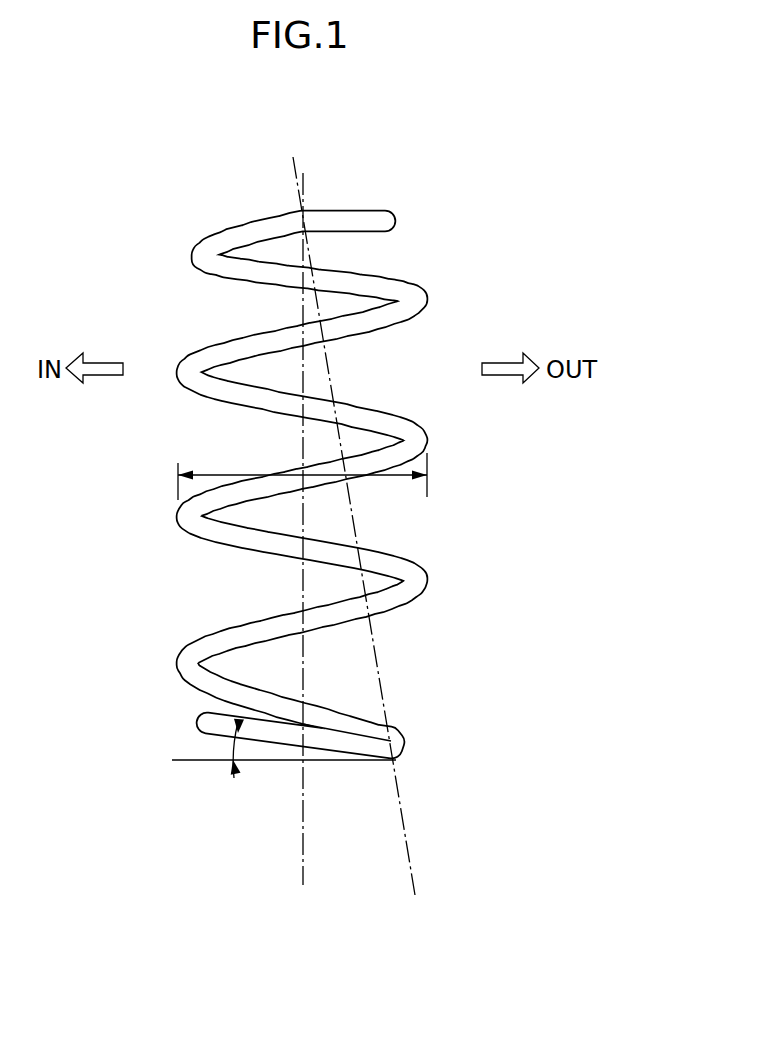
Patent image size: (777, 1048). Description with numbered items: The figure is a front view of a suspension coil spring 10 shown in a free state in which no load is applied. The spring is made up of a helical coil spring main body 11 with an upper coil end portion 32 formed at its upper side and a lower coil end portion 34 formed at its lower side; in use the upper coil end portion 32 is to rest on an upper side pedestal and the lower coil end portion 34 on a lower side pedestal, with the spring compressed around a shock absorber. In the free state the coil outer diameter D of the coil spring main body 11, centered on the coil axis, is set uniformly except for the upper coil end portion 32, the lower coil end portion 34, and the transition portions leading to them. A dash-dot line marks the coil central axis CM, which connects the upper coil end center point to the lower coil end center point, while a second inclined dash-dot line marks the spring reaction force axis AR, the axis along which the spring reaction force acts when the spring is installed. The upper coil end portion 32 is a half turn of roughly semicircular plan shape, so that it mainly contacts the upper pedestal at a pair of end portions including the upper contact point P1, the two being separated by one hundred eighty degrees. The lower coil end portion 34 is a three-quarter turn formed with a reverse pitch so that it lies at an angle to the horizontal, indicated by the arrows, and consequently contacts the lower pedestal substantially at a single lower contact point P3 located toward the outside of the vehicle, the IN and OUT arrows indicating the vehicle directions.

The suspension coil spring 10 is at (325, 438).
The coil spring main body 11 is at (412, 426).
The upper coil end portion 32 is at (384, 219).
The lower coil end portion 34 is at (206, 722).
The coil central axis CM is at (303, 368).
The spring reaction force axis AR is at (357, 540).
The upper contact point P1 is at (288, 190).
The lower contact point P3 is at (410, 772).
The coil outer diameter D is at (302, 473).